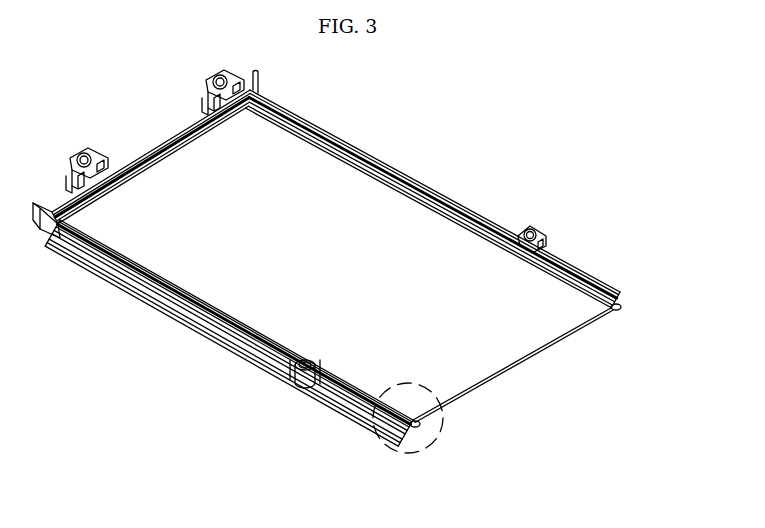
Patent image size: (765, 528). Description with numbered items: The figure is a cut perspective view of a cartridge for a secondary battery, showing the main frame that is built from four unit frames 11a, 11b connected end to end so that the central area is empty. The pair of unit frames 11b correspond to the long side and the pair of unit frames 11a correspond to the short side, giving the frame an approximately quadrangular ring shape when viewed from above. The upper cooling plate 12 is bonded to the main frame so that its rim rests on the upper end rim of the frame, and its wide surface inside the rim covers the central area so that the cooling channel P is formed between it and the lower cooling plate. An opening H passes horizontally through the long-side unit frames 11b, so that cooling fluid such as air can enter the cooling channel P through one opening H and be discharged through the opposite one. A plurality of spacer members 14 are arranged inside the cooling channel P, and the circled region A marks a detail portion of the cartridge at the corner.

The unit frame 11a is at (157, 148).
The unit frame 11b is at (413, 170).
The upper cooling plate 12 is at (455, 233).
The spacer member 14 is at (230, 322).
The cooling channel P is at (467, 398).
The opening H is at (415, 428).
The portion A is at (383, 442).